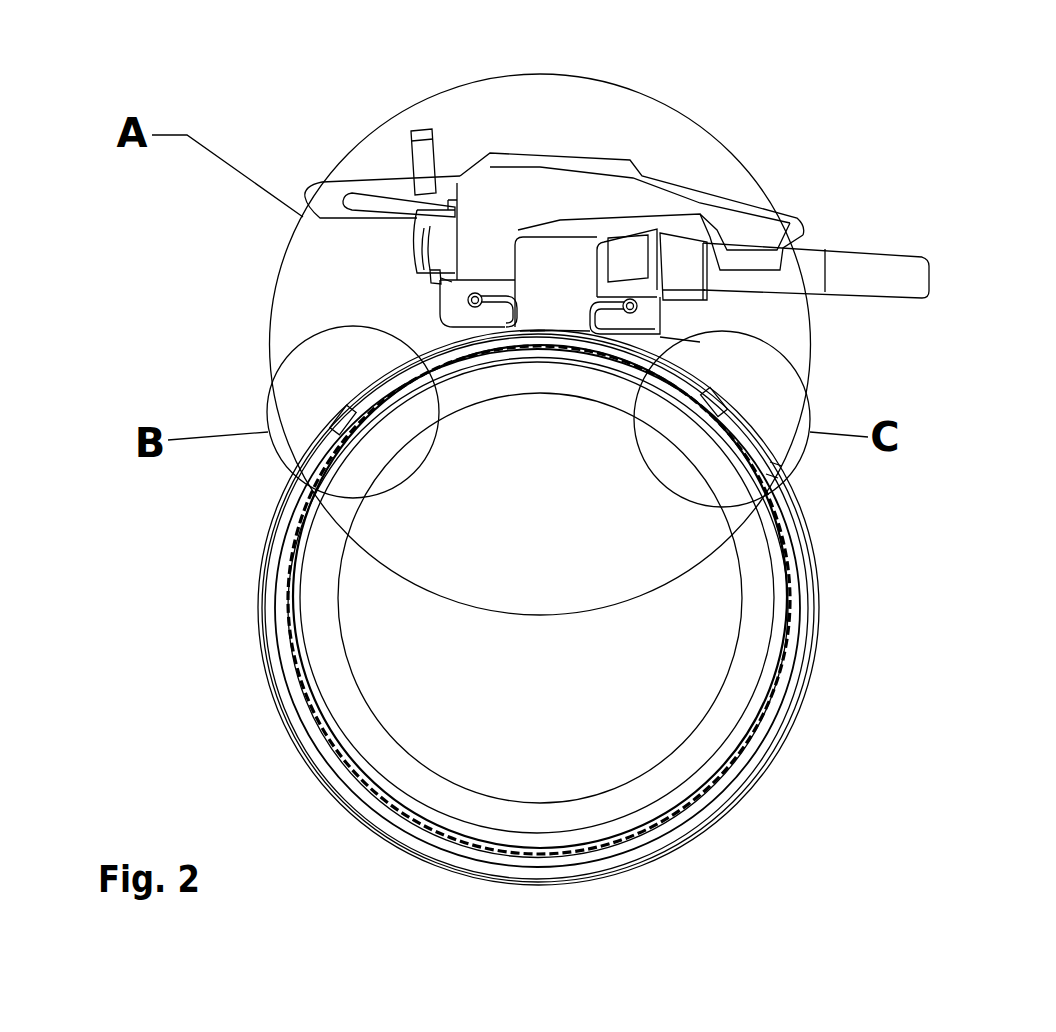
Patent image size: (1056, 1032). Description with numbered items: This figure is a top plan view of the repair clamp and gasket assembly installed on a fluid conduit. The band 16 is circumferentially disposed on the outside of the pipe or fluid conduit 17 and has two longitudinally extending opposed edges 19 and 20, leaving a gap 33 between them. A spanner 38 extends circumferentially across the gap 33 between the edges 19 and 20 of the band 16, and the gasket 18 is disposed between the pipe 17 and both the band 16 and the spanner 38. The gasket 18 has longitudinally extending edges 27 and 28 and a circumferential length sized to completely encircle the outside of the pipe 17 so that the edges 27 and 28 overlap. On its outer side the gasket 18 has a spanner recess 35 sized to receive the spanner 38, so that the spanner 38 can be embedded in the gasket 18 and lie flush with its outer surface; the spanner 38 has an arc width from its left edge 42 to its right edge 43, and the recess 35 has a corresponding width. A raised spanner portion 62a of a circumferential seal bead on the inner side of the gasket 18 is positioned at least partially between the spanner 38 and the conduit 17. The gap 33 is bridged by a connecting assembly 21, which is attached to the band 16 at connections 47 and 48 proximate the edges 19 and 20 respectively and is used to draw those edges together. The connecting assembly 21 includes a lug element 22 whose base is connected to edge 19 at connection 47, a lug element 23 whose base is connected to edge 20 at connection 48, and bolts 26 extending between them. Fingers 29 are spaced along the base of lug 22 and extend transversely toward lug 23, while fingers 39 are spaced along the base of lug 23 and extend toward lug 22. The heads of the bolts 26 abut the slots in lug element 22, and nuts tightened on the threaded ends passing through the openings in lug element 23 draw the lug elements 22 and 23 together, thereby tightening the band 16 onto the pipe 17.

The band 16 is at (778, 760).
The pipe or fluid conduit 17 is at (398, 745).
The gasket 18 is at (293, 517).
The longitudinally extending edge of band 19 is at (614, 294).
The longitudinally extending edge of band 20 is at (578, 310).
The connecting assembly 21 is at (605, 217).
The lug element 22 is at (460, 290).
The lug element 23 is at (522, 313).
The bolts 26 is at (897, 270).
The longitudinally extending edge of gasket 27 is at (808, 558).
The longitudinally extending edge of gasket 28 is at (703, 772).
The fingers 29 is at (735, 192).
The gap 33 is at (560, 311).
The spanner recess 35 is at (710, 397).
The spanner 38 is at (548, 328).
The fingers 39 is at (366, 184).
The left edge of spanner 42 is at (340, 417).
The right edge of spanner 43 is at (775, 470).
The connection 47 is at (500, 323).
The connection 48 is at (620, 325).
The raised spanner portion of circumferential seal bead 62a is at (546, 359).